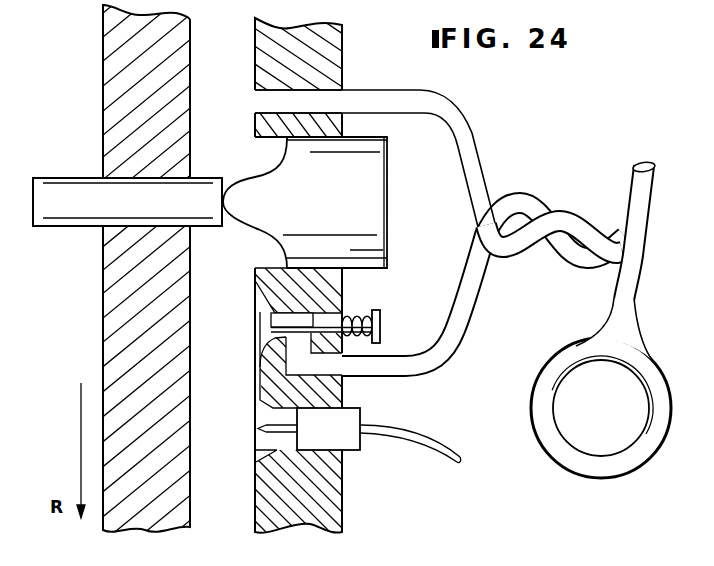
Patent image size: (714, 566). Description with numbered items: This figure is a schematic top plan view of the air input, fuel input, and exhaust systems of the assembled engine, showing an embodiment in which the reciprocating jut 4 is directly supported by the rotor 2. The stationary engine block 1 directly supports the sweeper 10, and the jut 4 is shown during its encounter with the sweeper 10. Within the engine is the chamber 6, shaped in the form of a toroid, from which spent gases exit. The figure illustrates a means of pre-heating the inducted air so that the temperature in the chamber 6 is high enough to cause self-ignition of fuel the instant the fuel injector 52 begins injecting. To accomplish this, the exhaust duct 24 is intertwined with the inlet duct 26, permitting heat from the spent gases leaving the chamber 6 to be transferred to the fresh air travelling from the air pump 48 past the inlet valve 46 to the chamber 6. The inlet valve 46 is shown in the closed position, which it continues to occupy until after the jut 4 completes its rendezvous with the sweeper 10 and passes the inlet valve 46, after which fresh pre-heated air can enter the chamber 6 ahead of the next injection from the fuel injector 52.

The engine block 1 is at (343, 82).
The rotor 2 is at (103, 133).
The jut 4 is at (50, 190).
The chamber 6 is at (208, 154).
The sweeper 10 is at (380, 188).
The exhaust duct 24 is at (460, 130).
The inlet duct 26 is at (463, 293).
The inlet valve 46 is at (271, 327).
The air pump 48 is at (590, 453).
The fuel injector 52 is at (343, 427).